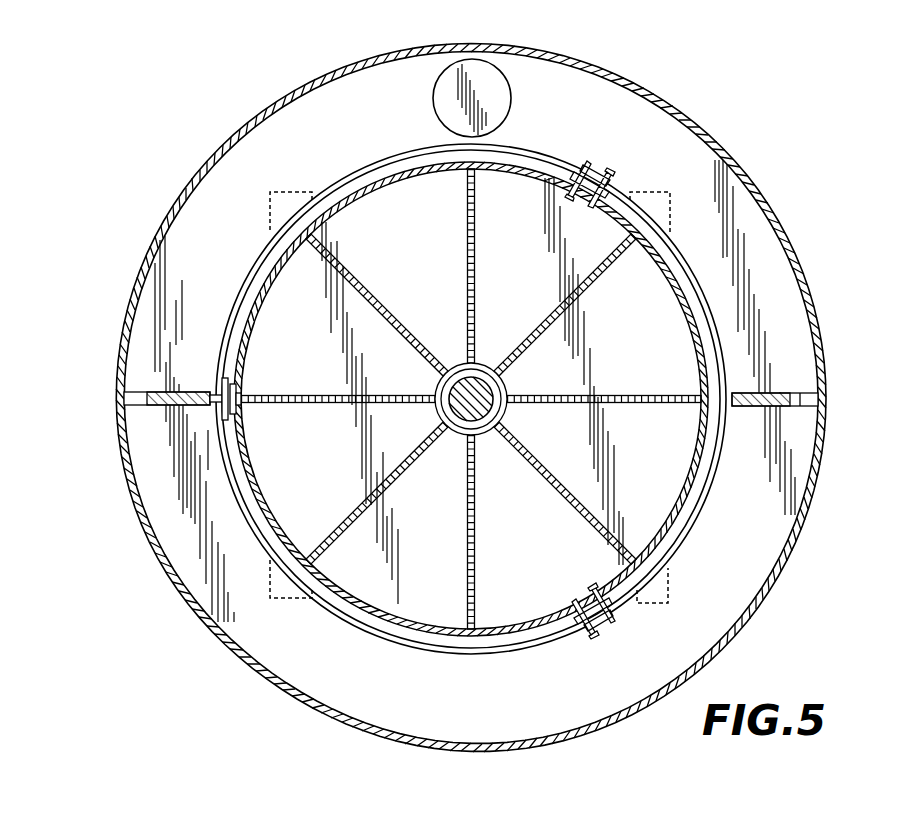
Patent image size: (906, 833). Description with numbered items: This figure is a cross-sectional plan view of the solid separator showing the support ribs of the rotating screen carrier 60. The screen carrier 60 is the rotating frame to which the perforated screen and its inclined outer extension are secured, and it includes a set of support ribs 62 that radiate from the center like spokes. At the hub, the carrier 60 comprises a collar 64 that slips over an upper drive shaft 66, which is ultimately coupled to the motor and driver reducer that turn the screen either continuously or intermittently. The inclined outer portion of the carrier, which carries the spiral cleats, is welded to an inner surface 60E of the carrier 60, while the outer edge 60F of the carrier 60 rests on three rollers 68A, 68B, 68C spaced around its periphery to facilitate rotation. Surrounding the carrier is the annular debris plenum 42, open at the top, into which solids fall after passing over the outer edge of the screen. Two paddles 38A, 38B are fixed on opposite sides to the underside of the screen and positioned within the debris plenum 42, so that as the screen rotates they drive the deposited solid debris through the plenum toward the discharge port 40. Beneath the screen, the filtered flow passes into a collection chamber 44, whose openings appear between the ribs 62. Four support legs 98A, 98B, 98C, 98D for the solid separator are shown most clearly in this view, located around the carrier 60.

The paddle 38A is at (152, 393).
The paddle 38B is at (744, 391).
The discharge port 40 is at (504, 78).
The annular debris plenum 42 is at (626, 88).
The collection chamber 44 is at (303, 364).
The screen carrier 60 is at (681, 260).
The inner surface of the carrier 60E is at (673, 297).
The outer edge of the carrier 60F is at (682, 282).
The support ribs 62 is at (462, 246).
The collar 64 is at (484, 372).
The upper drive shaft 66 is at (500, 406).
The roller 68A is at (572, 174).
The roller 68B is at (230, 427).
The roller 68C is at (563, 624).
The support leg 98A is at (281, 192).
The support leg 98B is at (652, 192).
The support leg 98C is at (290, 598).
The support leg 98D is at (652, 603).